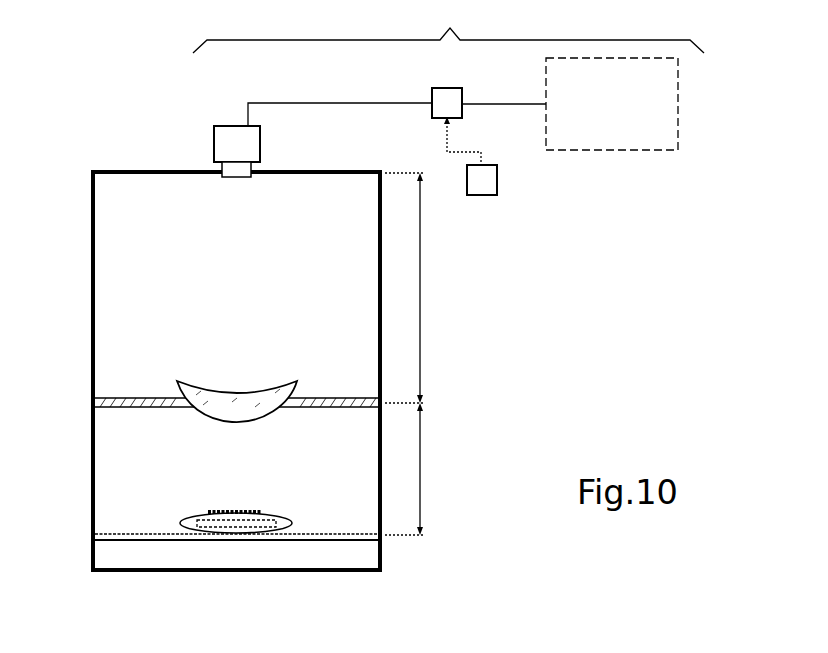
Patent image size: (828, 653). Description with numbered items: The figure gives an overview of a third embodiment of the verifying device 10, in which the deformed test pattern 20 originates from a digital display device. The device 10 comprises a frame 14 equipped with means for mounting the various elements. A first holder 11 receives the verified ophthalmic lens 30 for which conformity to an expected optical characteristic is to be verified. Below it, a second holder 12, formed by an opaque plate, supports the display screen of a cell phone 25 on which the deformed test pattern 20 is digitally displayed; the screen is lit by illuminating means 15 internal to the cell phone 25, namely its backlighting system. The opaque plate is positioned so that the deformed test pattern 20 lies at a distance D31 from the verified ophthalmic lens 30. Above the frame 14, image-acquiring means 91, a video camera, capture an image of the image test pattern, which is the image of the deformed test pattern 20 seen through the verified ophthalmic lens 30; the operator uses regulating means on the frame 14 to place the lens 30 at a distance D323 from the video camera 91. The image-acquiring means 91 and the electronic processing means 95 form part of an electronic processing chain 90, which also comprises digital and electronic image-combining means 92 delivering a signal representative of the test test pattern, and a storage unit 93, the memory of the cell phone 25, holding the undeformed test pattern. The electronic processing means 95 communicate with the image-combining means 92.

The verifying device 10 is at (600, 352).
The first holder 11 is at (133, 398).
The second holder 12 is at (120, 536).
The frame 14 is at (92, 303).
The illuminating means 15 is at (233, 530).
The deformed test pattern 20 is at (253, 508).
The cell phone 25 is at (180, 523).
The verified ophthalmic lens 30 is at (230, 426).
The electronic processing chain 90 is at (448, 26).
The image-acquiring means 91 is at (214, 147).
The image-combining means 92 is at (432, 110).
The storage unit 93 is at (497, 180).
The electronic processing means 95 is at (678, 117).
The distance D323 is at (420, 280).
The distance D31 is at (420, 466).